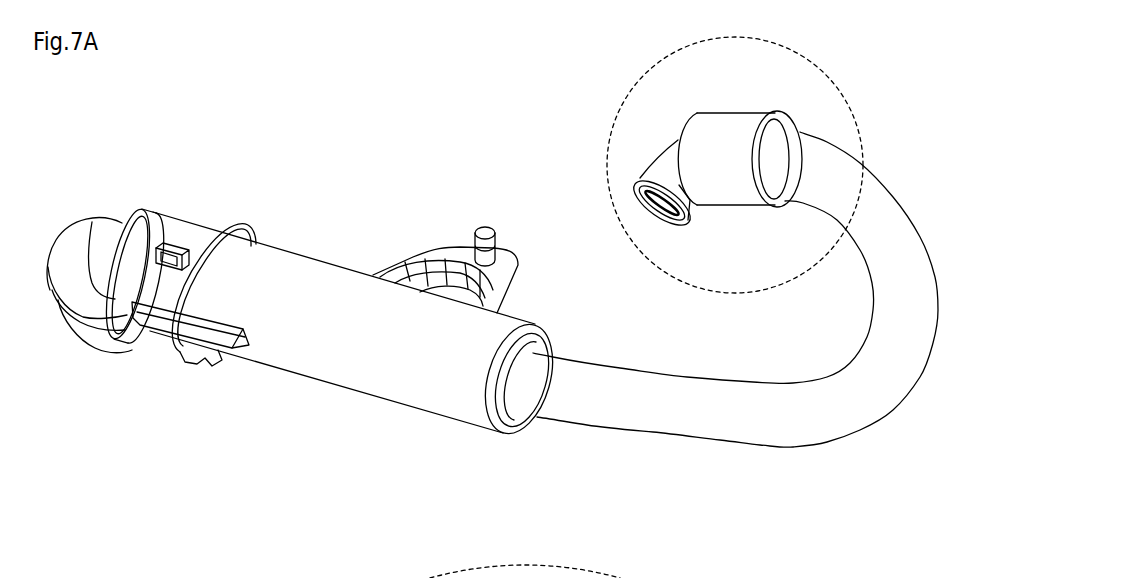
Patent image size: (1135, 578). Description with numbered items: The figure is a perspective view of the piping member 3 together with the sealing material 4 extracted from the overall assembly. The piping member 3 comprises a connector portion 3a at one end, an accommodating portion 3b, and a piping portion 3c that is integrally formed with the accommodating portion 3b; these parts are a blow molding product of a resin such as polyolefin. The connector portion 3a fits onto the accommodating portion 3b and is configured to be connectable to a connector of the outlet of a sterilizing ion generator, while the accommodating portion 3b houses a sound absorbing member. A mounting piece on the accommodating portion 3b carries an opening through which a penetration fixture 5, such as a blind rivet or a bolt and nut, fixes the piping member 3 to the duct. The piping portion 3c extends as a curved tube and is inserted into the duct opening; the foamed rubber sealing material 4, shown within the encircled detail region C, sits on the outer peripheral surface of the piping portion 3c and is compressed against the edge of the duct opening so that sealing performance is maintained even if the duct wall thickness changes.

The piping member 3 is at (372, 205).
The connector portion 3a is at (91, 208).
The accommodating portion 3b is at (340, 409).
The piping portion 3c is at (861, 447).
The sealing material 4 is at (658, 122).
The penetration fixture 5 is at (485, 228).
The detail region C is at (735, 165).